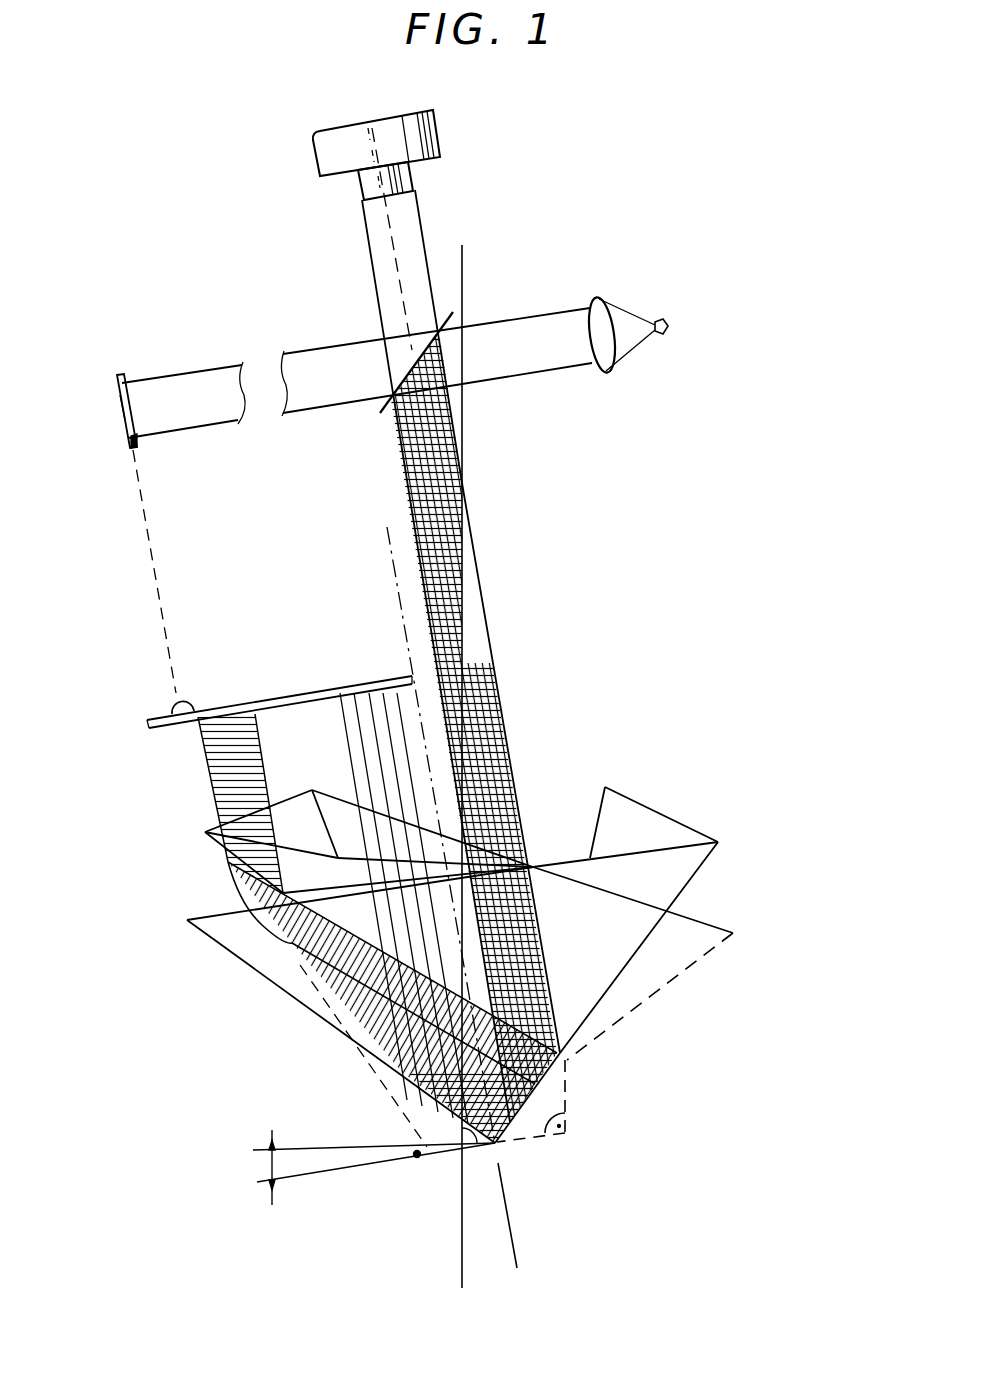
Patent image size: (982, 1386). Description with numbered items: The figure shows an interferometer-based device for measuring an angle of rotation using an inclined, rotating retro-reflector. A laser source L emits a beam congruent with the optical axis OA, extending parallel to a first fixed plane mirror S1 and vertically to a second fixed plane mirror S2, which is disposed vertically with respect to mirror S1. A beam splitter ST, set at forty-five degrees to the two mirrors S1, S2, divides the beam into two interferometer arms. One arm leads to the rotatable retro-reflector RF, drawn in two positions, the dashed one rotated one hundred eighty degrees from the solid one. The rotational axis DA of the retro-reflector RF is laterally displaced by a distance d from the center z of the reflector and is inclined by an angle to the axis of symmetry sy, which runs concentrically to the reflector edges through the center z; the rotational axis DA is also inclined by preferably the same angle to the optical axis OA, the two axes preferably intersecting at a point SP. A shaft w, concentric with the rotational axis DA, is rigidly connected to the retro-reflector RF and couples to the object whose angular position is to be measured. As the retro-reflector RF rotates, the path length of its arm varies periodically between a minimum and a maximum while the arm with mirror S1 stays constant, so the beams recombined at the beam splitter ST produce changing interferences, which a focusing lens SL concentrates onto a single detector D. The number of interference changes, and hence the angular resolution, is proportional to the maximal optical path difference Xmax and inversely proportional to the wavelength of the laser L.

The laser source L is at (437, 125).
The optical axis OA is at (405, 210).
The beam splitter ST is at (450, 318).
The focusing lens SL is at (600, 300).
The detector D is at (668, 326).
The first fixed plane mirror S1 is at (117, 375).
The second fixed plane mirror S2 is at (147, 723).
The intersection point SP is at (475, 606).
The rotatable retro-reflector RF is at (720, 845).
The maximal optical path difference Xmax is at (417, 1156).
The lateral displacement distance d is at (456, 1146).
The center of the reflector z is at (497, 1146).
The axis of symmetry sy is at (518, 1258).
The shaft w is at (462, 1225).
The rotational axis DA is at (464, 1292).